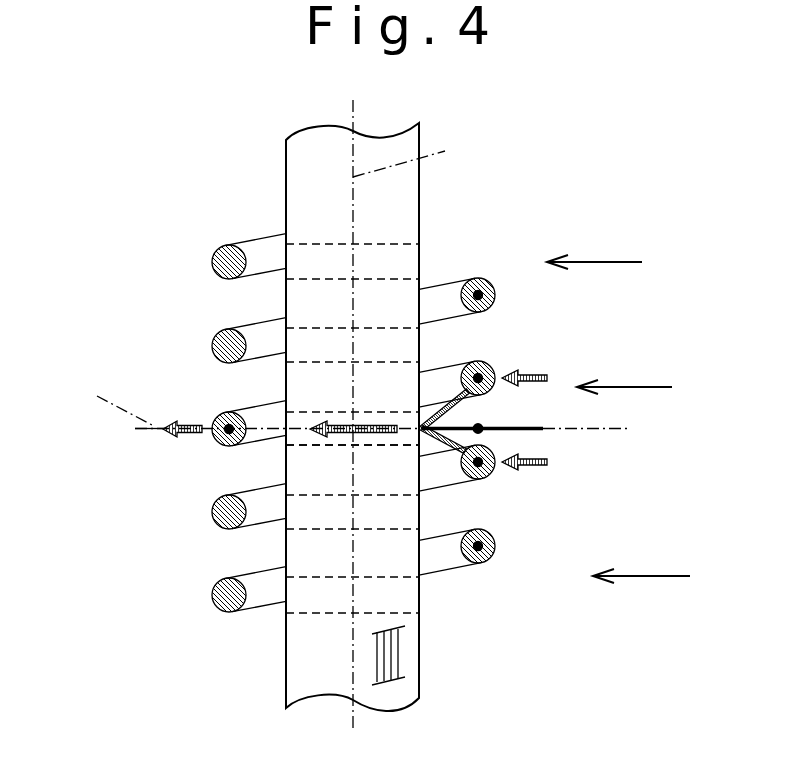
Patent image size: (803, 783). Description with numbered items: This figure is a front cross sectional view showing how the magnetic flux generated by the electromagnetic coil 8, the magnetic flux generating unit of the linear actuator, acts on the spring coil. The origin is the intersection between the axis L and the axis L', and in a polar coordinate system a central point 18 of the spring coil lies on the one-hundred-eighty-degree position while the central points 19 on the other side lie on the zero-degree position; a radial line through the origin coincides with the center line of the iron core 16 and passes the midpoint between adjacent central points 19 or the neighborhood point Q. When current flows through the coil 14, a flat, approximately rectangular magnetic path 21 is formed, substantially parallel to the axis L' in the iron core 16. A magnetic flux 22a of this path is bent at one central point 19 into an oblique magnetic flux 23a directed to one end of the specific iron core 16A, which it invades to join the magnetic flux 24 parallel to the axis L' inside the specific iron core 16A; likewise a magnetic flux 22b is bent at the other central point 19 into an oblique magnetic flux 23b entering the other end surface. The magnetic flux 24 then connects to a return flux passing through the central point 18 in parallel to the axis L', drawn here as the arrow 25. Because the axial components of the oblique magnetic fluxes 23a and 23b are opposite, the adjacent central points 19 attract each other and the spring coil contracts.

The electromagnetic coil 8 is at (255, 193).
The coil 14 is at (396, 656).
The iron core 16 is at (312, 326).
The specific iron core 16A is at (370, 446).
The central point 18 is at (214, 416).
The central point 19 is at (486, 281).
The magnetic path 21 is at (600, 262).
The magnetic flux 22a is at (540, 375).
The magnetic flux 22b is at (536, 465).
The oblique magnetic flux 23a is at (455, 402).
The oblique magnetic flux 23b is at (432, 441).
The magnetic flux 24 is at (312, 438).
The reaction force 25 is at (177, 444).
The neighborhood point Q is at (483, 431).
The axis L is at (404, 160).
The axis L' is at (113, 406).